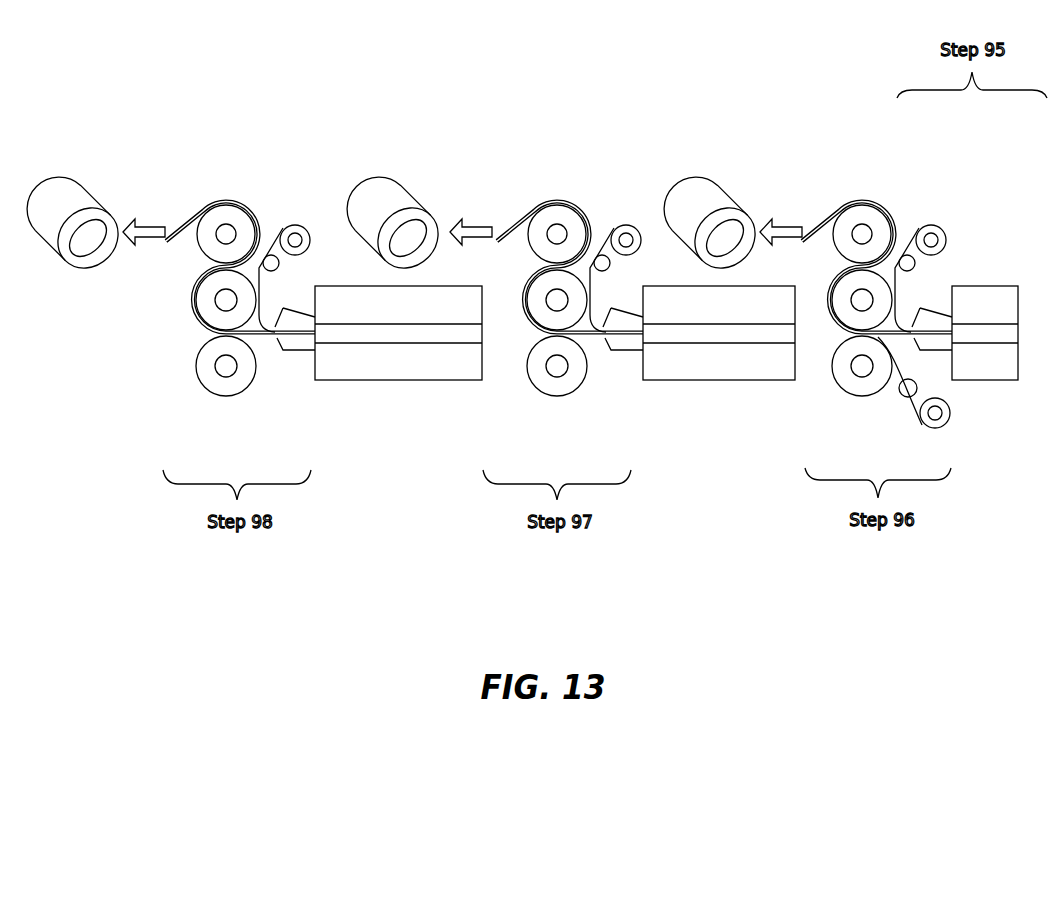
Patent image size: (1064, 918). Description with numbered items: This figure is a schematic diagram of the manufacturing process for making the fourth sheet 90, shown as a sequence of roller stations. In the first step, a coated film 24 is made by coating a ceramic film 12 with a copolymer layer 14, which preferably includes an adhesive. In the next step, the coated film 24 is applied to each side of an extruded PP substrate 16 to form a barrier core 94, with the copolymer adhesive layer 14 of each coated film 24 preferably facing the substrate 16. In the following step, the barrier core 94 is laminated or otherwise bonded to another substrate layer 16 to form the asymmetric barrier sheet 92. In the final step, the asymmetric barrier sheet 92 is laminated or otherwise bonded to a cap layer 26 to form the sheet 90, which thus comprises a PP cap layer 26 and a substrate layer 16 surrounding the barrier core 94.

The ceramic film 12 is at (968, 184).
The copolymer layer 14 is at (949, 218).
The substrate 16 is at (590, 337).
The coated film 24 is at (908, 228).
The cap layer 26 is at (260, 336).
The sheet 90 is at (107, 177).
The asymmetric barrier sheet 92 is at (272, 227).
The barrier core 94 is at (601, 232).